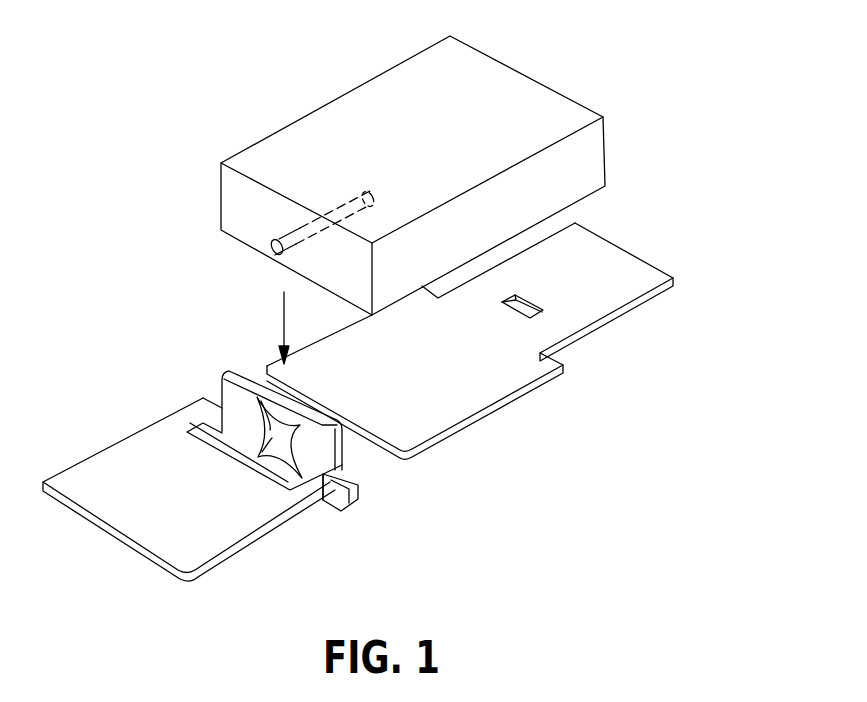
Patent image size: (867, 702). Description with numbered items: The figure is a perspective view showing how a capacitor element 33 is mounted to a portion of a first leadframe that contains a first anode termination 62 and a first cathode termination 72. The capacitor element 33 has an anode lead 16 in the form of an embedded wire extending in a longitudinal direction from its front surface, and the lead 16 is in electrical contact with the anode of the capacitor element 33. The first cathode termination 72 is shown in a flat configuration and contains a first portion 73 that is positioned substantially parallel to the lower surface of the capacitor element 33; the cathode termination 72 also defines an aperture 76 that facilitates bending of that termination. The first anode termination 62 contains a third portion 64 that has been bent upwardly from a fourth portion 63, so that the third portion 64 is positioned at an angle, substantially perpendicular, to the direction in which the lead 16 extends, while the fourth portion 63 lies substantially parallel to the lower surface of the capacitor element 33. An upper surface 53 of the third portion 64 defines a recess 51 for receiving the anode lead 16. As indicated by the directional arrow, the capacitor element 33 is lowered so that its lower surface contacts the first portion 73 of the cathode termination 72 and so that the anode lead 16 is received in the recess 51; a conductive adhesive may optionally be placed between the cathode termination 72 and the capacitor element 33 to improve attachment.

The capacitor element 33 is at (477, 110).
The anode lead 16 is at (337, 212).
The recess 51 is at (277, 397).
The first cathode termination 72 is at (489, 324).
The first portion 73 is at (414, 391).
The aperture 76 is at (623, 251).
The first anode termination 62 is at (192, 514).
The fourth portion 63 is at (179, 500).
The upper surface 53 is at (357, 435).
The third portion 64 is at (325, 456).